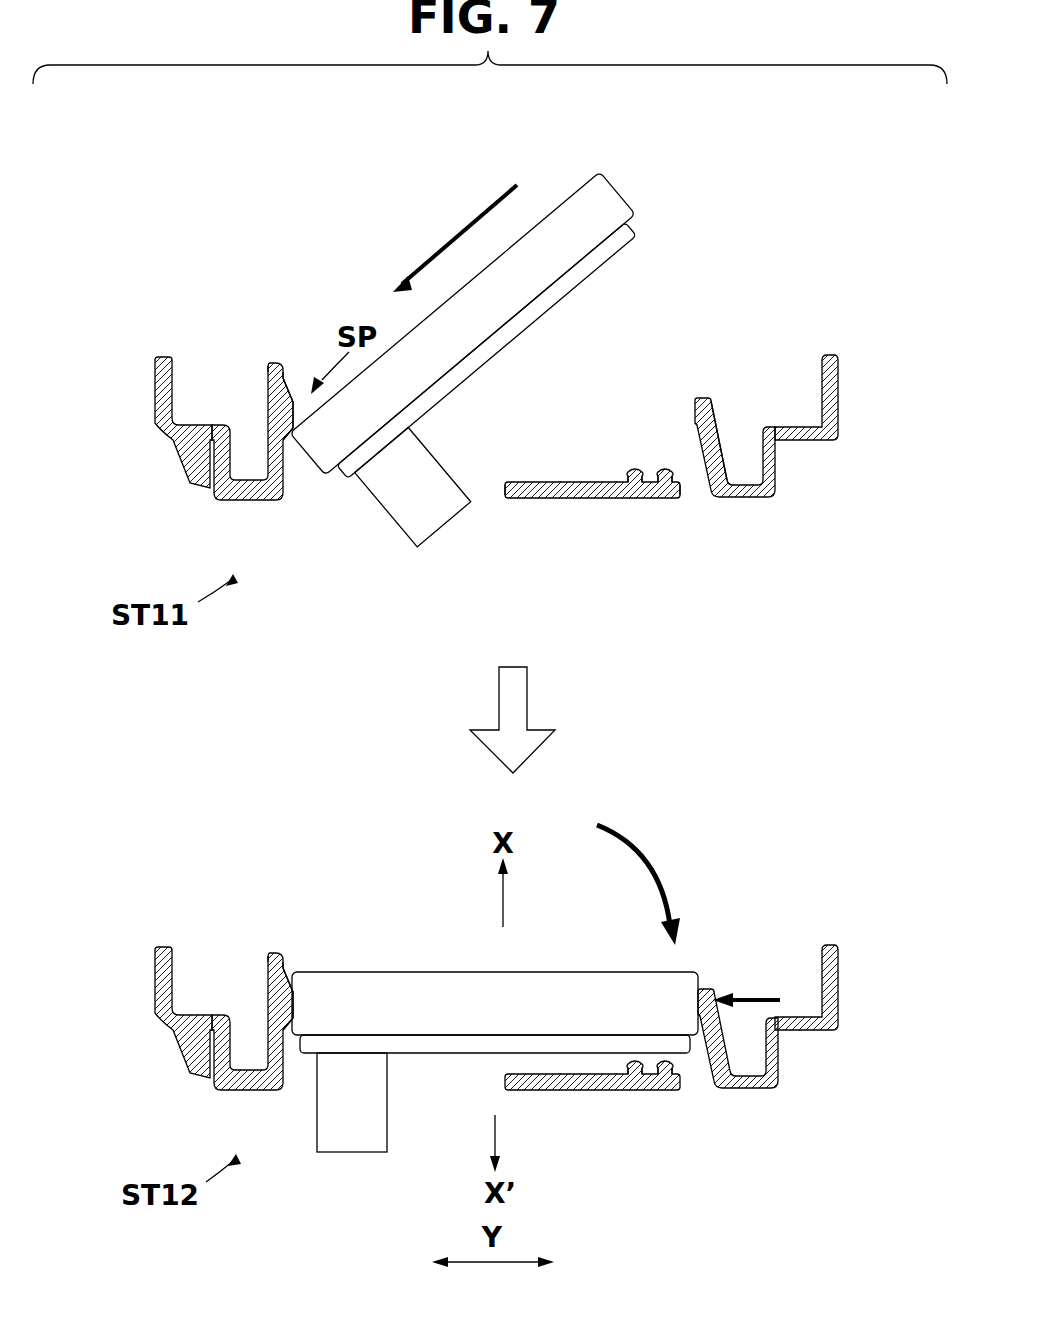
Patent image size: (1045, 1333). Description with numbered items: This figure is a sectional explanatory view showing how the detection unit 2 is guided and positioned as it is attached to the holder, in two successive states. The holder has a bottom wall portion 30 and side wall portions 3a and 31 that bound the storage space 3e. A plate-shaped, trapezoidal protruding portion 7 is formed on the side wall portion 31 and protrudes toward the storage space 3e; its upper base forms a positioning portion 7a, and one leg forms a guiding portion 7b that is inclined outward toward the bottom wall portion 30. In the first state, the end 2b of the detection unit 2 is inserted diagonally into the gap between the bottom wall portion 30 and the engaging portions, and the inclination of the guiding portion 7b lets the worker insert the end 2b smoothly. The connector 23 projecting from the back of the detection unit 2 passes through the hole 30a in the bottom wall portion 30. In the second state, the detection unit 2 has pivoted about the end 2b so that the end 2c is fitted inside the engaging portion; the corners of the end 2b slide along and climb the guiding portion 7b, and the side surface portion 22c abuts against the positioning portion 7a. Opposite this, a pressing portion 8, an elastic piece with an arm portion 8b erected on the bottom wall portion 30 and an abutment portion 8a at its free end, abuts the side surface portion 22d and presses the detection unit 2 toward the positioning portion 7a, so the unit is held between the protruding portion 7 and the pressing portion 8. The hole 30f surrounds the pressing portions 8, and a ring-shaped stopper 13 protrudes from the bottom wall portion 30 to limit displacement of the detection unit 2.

The detection unit 2 is at (567, 190).
The end of the detection unit 2b is at (335, 478).
The end of the detection unit 2c is at (618, 198).
The side wall portion 3a is at (155, 355).
The storage space 3e is at (585, 385).
The protruding portion 7 is at (291, 362).
The positioning portion 7a is at (292, 392).
The guiding portion 7b is at (287, 440).
The pressing portion 8 is at (732, 382).
The abutment portion 8a is at (694, 400).
The arm portion 8b is at (718, 432).
The stopper 13 is at (635, 468).
The right side surface portion 22c is at (322, 480).
The left side surface portion 22d is at (618, 193).
The connector 23 is at (453, 533).
The bottom wall portion 30 is at (600, 500).
The hole 30a is at (488, 500).
The hole 30f is at (703, 500).
The side wall portion 31 is at (265, 362).